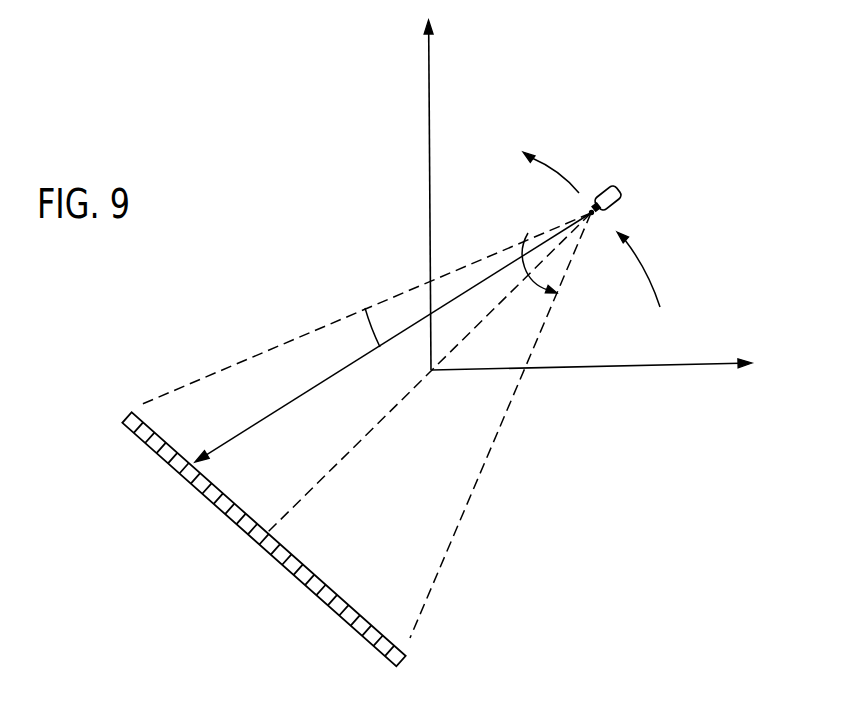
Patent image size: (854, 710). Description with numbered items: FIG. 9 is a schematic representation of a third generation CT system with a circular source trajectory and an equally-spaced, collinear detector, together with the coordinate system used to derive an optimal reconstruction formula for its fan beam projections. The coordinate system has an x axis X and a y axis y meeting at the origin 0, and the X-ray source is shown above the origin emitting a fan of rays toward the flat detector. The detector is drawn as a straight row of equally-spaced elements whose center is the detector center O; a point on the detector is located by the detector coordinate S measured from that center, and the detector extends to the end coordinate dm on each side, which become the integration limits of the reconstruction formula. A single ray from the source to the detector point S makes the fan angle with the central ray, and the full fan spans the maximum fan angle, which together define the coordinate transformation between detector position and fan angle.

The detector coordinate S is at (356, 439).
The detector center O is at (418, 392).
The detector end coordinate dm is at (500, 447).
The x axis X is at (593, 378).
The y axis y is at (442, 191).
The origin 0 is at (441, 383).